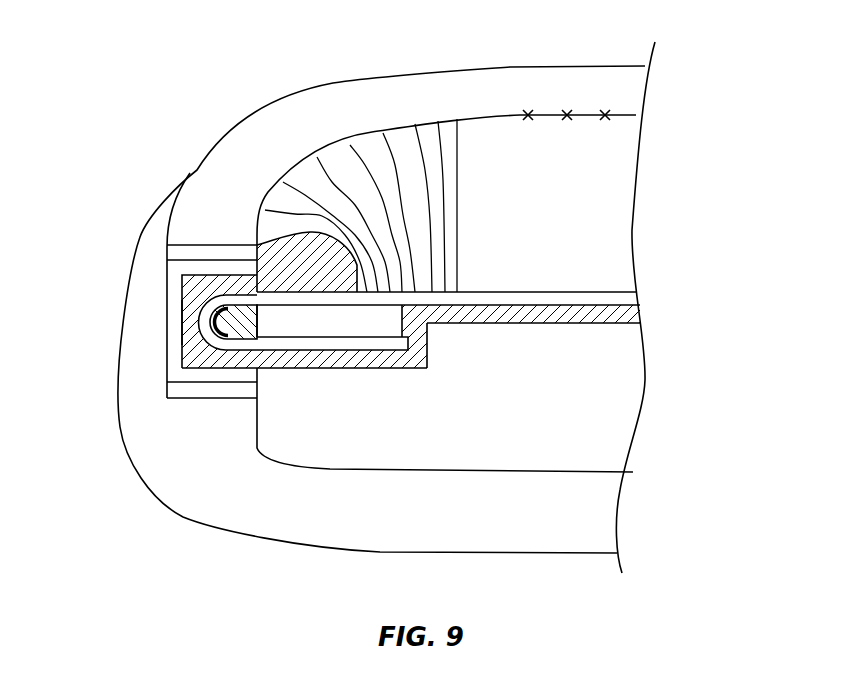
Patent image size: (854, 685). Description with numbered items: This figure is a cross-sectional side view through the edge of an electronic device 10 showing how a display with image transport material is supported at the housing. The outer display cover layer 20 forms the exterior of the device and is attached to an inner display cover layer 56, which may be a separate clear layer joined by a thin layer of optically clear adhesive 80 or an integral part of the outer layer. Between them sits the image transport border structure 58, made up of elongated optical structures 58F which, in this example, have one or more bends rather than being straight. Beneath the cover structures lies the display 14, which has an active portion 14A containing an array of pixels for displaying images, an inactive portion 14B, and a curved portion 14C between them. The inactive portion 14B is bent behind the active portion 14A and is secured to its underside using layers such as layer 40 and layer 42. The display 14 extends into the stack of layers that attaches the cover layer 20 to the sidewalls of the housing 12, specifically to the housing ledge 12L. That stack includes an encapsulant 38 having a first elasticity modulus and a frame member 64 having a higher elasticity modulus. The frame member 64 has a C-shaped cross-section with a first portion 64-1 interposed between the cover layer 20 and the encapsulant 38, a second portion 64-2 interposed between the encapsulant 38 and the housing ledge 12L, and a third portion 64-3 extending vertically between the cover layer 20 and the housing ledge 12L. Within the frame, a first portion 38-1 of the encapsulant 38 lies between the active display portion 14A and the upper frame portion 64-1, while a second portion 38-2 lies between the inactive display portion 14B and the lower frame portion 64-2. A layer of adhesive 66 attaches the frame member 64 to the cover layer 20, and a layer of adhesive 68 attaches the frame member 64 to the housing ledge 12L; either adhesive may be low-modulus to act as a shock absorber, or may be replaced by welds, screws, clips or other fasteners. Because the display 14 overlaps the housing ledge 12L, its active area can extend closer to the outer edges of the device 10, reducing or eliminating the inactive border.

The electronic device 10 is at (178, 80).
The housing 12 is at (498, 528).
The housing ledge 12L is at (216, 398).
The display 14 is at (600, 299).
The active portion 14A is at (497, 305).
The inactive portion 14B is at (243, 369).
The curved portion 14C is at (198, 323).
The outer display cover layer 20 is at (548, 78).
The encapsulant 38 is at (430, 324).
The first portion of encapsulant 38-1 is at (203, 263).
The second portion of encapsulant 38-2 is at (318, 369).
The layer 40 is at (248, 318).
The layer 42 is at (370, 328).
The inner display cover layer 56 is at (617, 192).
The image transport border structure 58 is at (440, 97).
The elongated optical structures 58F is at (443, 200).
The frame member 64 is at (180, 296).
The first portion of frame member 64-1 is at (179, 251).
The second portion of frame member 64-2 is at (200, 378).
The third portion of frame member 64-3 is at (179, 318).
The adhesive 66 is at (175, 257).
The adhesive 68 is at (182, 393).
The adhesive 80 is at (604, 111).